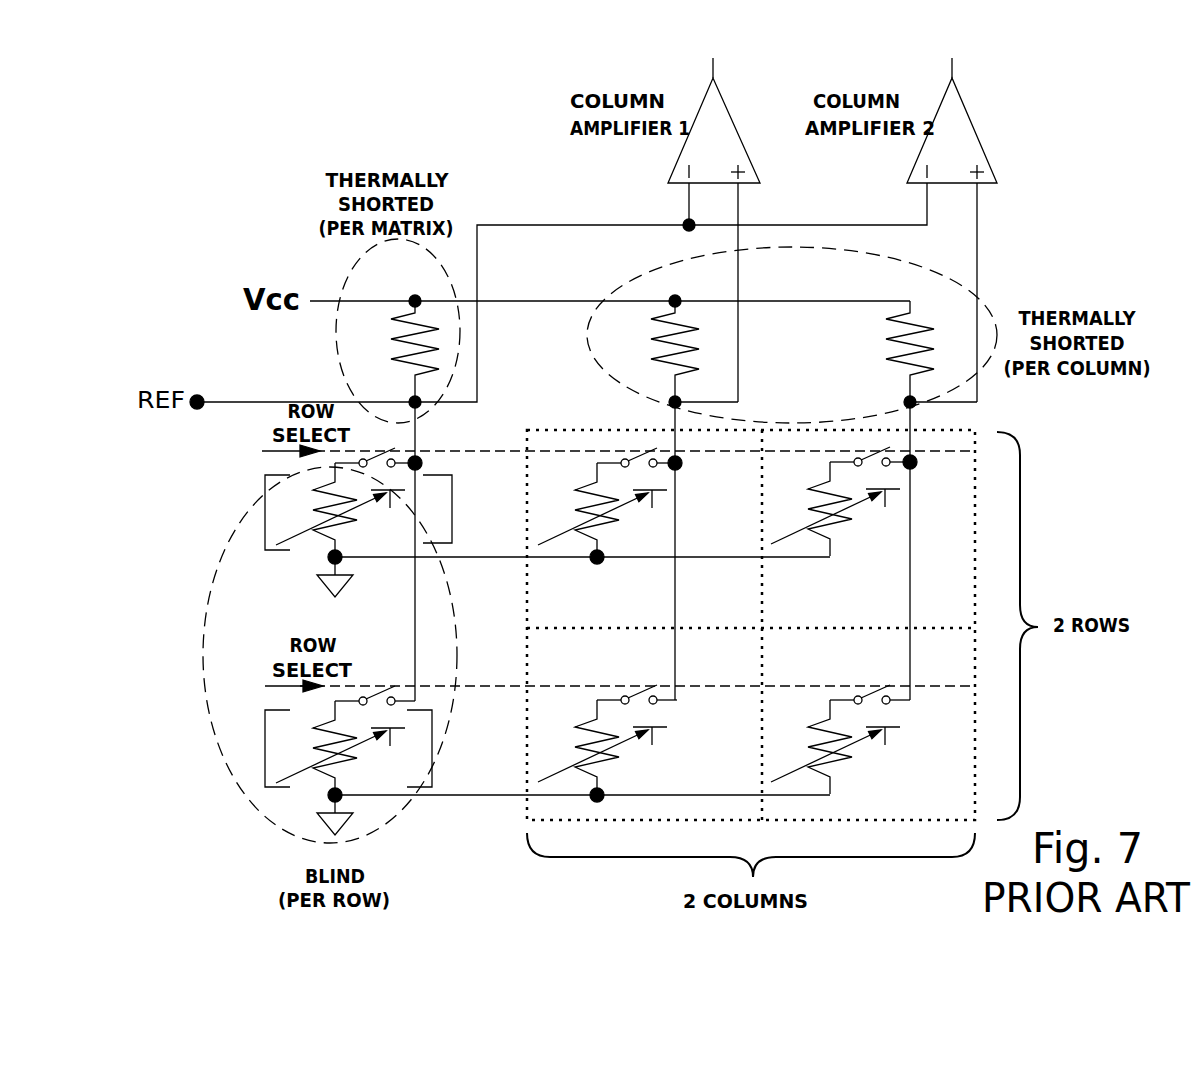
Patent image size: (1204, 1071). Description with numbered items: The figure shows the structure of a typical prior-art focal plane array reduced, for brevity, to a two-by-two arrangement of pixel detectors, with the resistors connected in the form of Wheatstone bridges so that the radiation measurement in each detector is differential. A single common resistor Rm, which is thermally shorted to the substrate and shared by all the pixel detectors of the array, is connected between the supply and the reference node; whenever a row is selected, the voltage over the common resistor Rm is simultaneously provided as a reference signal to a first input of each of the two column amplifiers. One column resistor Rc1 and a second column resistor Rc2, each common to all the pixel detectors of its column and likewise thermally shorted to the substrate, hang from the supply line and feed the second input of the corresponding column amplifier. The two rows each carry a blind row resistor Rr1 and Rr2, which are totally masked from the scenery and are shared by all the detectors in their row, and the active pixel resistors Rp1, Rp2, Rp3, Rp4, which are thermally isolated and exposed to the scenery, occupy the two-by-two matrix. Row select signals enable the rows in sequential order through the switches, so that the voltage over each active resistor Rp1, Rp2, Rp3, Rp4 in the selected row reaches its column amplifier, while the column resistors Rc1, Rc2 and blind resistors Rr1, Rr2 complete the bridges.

The common matrix resistor Rm is at (398, 331).
The column resistor Rc1 is at (656, 351).
The column resistor Rc2 is at (886, 354).
The blind row resistor Rr1 is at (358, 502).
The blind row resistor Rr2 is at (348, 740).
The active pixel resistor Rp1 is at (610, 502).
The active pixel resistor Rp2 is at (844, 505).
The active pixel resistor Rp3 is at (608, 739).
The active pixel resistor Rp4 is at (840, 742).